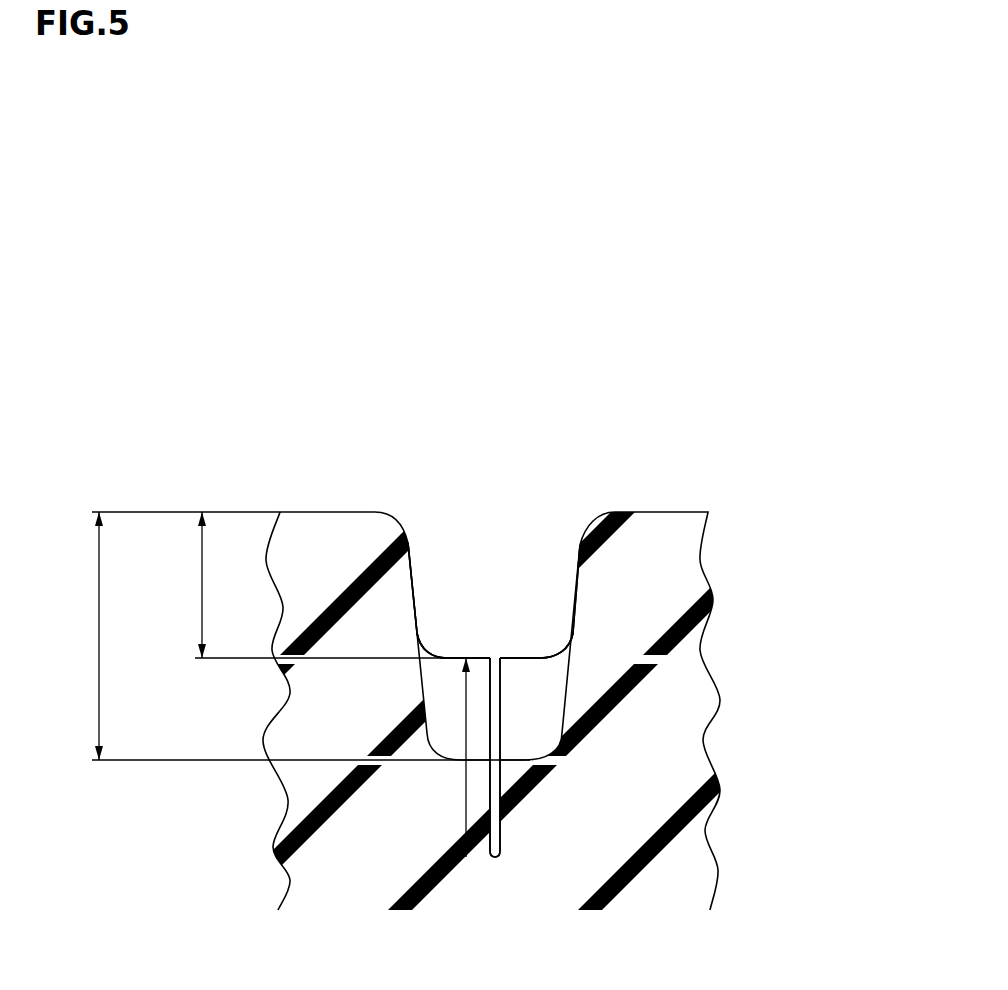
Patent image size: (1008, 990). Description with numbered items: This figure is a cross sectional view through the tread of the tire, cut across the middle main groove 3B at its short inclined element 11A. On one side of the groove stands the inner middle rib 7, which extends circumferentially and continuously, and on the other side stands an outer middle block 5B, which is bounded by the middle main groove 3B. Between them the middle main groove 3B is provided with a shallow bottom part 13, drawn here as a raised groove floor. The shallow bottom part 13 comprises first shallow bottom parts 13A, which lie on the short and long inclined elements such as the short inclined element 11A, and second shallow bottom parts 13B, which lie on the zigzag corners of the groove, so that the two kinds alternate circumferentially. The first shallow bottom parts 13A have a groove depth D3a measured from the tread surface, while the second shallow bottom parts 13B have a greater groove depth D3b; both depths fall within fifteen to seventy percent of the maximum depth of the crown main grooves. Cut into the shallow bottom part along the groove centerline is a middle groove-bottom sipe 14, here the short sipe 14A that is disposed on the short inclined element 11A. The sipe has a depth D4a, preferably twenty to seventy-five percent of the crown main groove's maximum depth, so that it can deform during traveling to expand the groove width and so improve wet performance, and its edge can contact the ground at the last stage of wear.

The inner middle rib 7 is at (342, 500).
The outer middle block 5B is at (649, 500).
The middle main groove 3B is at (494, 525).
The short inclined element 11A is at (494, 600).
The shallow bottom part 13 is at (646, 649).
The first shallow bottom part 13A is at (528, 657).
The second shallow bottom part 13B is at (527, 760).
The middle groove-bottom sipe 14 is at (678, 757).
The short sipe 14A is at (497, 805).
The groove depth of first shallow bottom part D3a is at (297, 585).
The groove depth of second shallow bottom part D3b is at (287, 636).
The depth of middle groove-bottom sipe D4a is at (464, 770).